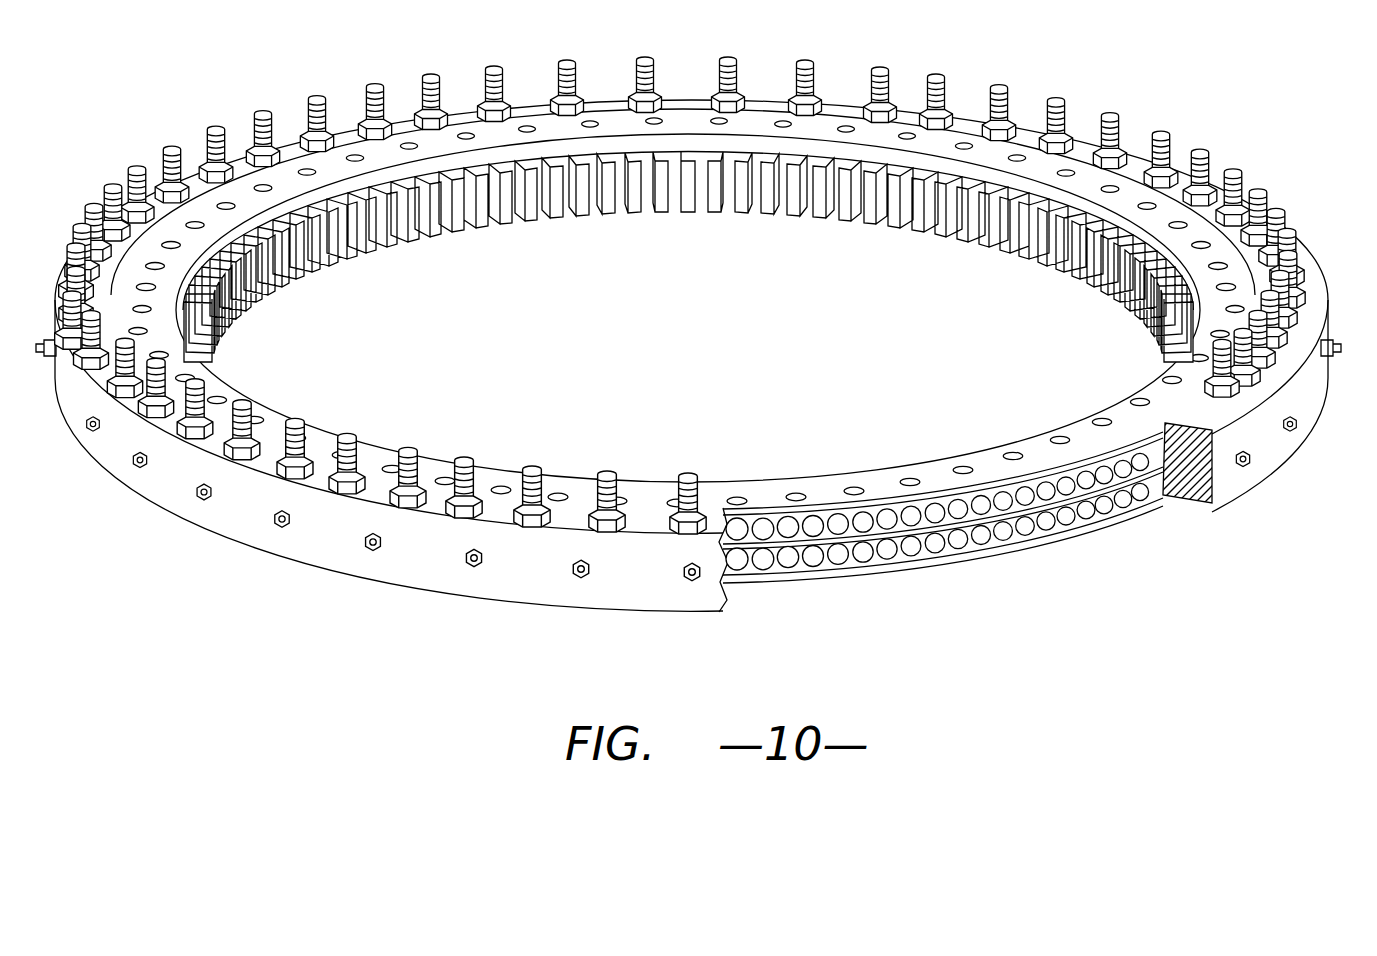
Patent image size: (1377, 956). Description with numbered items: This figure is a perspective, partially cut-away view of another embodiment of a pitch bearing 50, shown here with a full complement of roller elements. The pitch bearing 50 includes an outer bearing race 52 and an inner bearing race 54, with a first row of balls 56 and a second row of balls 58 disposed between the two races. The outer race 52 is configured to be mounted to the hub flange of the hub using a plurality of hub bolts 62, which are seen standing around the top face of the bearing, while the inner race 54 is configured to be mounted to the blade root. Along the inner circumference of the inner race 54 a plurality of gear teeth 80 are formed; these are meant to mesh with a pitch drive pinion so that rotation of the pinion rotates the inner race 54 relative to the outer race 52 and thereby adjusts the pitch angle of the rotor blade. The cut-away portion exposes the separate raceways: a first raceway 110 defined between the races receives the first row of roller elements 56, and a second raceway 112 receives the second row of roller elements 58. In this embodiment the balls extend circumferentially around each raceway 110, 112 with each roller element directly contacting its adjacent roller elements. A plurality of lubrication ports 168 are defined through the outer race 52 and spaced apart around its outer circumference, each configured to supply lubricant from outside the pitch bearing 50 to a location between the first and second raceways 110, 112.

The pitch bearing 50 is at (706, 347).
The outer bearing race 52 is at (1300, 388).
The inner bearing race 54 is at (1197, 260).
The first row of roller elements 56 is at (1000, 497).
The second row of roller elements 58 is at (940, 552).
The hub bolts 62 is at (172, 180).
The gear teeth 80 is at (398, 240).
The first raceway 110 is at (823, 523).
The second raceway 112 is at (1143, 503).
The lubrication ports 168 is at (135, 468).